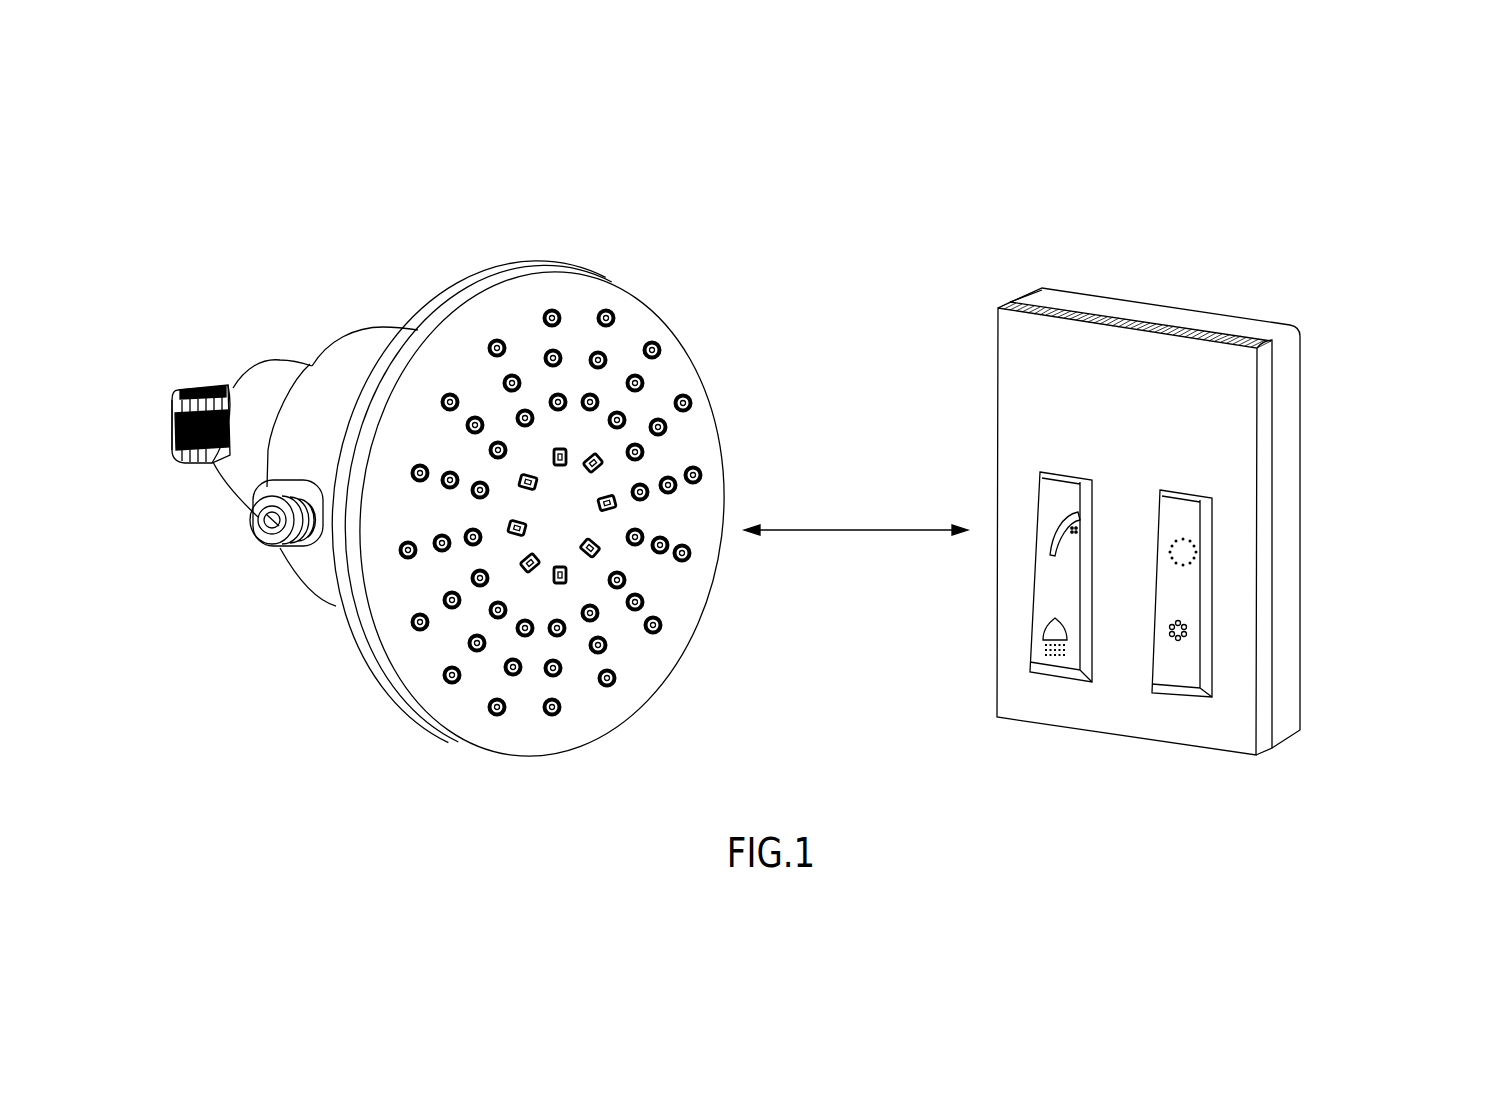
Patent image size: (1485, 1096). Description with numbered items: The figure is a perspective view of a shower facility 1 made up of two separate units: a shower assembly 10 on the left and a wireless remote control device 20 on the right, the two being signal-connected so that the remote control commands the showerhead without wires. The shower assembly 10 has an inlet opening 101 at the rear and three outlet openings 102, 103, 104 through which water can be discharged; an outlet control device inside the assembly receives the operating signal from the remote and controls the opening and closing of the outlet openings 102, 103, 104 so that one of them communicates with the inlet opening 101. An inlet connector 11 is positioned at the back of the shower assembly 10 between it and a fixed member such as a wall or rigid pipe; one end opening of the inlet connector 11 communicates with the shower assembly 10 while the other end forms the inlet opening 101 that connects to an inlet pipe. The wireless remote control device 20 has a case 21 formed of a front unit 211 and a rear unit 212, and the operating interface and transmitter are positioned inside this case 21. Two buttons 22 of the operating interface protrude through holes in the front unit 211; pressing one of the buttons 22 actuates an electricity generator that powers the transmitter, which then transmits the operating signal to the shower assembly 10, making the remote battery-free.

The shower facility 1 is at (273, 233).
The shower assembly 10 is at (520, 225).
The inlet connector 11 is at (200, 403).
The inlet opening 101 is at (163, 415).
The outlet opening 102 is at (265, 530).
The outlet opening 103 is at (659, 630).
The outlet opening 104 is at (693, 401).
The wireless remote control device 20 is at (1164, 262).
The case 21 is at (1403, 305).
The front unit 211 is at (1265, 394).
The rear unit 212 is at (1288, 351).
The button 22 is at (1060, 666).